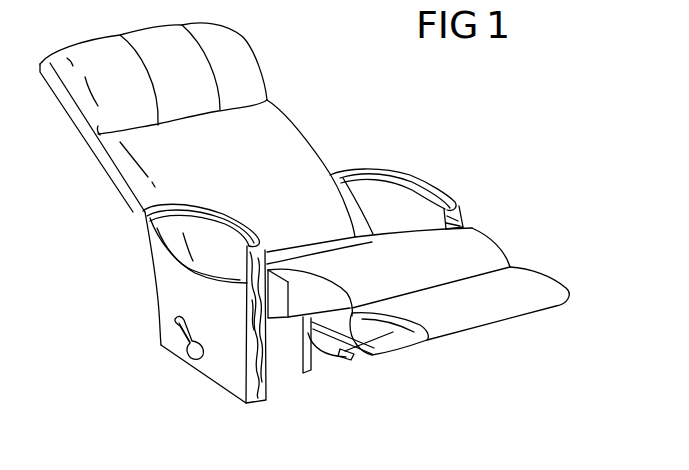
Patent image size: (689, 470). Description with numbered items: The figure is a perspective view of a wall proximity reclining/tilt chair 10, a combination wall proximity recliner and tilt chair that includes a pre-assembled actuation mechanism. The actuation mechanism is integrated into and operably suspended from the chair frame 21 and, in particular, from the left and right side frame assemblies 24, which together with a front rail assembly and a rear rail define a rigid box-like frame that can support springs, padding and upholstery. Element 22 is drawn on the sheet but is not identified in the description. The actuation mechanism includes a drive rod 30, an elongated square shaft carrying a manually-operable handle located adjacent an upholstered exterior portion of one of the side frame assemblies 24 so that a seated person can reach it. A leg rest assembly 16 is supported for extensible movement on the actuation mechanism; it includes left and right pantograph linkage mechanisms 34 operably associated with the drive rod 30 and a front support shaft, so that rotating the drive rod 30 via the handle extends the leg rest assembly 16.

The wall proximity reclining/tilt chair 10 is at (313, 108).
The leg rest assembly 16 is at (550, 285).
The chair frame 21 is at (148, 247).
The side frame assemblies 24 is at (171, 290).
The actuator handle 22 is at (160, 347).
The drive rod 30 is at (370, 343).
The pantograph linkage mechanisms 34 is at (352, 357).